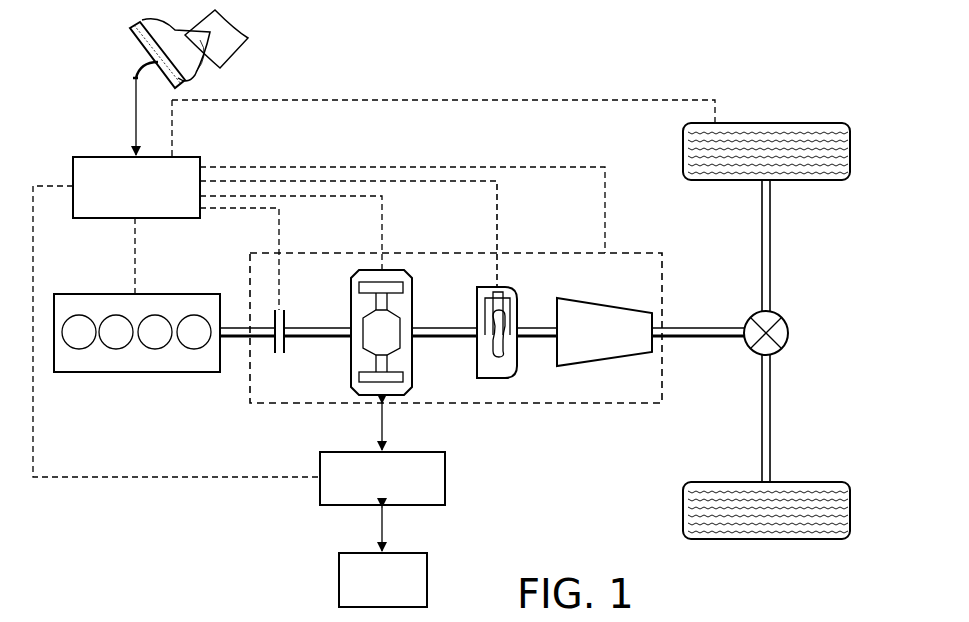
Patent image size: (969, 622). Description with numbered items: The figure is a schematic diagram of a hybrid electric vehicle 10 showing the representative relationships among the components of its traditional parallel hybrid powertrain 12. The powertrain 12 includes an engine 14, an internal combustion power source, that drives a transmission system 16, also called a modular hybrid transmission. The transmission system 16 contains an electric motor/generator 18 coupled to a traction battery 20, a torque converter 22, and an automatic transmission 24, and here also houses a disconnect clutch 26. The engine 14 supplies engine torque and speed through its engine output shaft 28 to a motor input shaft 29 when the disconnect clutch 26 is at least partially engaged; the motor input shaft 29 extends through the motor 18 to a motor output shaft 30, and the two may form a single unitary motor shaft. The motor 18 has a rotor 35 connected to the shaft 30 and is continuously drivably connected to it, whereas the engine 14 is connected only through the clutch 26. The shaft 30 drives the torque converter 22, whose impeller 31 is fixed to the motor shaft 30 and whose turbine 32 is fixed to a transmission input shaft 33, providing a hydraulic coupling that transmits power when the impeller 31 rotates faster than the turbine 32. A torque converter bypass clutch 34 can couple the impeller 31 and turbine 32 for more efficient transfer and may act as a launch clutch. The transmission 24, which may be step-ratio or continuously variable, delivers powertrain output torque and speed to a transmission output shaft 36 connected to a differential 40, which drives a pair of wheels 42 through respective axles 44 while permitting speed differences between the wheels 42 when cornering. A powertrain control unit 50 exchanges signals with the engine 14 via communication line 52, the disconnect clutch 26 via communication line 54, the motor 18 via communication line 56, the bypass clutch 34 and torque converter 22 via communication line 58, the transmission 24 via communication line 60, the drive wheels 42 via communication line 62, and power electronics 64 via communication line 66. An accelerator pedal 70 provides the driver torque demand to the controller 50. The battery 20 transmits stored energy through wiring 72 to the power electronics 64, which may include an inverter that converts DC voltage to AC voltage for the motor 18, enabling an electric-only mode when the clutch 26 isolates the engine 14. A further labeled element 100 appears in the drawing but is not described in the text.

The hybrid electric vehicle 10 is at (600, 70).
The parallel hybrid powertrain 12 is at (233, 517).
The engine 14 is at (97, 294).
The transmission system 16 is at (470, 253).
The electric motor/generator 18 is at (368, 270).
The traction battery 20 is at (339, 580).
The torque converter 22 is at (503, 380).
The automatic transmission 24 is at (605, 366).
The disconnect clutch 26 is at (289, 347).
The engine output shaft 28 is at (247, 328).
The motor input shaft 29 is at (340, 328).
The motor output shaft 30 is at (457, 328).
The impeller 31 is at (497, 362).
The turbine 32 is at (491, 320).
The transmission input shaft 33 is at (528, 328).
The torque converter bypass clutch 34 is at (500, 295).
The rotor 35 is at (400, 282).
The transmission output shaft 36 is at (713, 328).
The differential 40 is at (790, 340).
The wheels 42 is at (745, 123).
The axles 44 is at (775, 250).
The powertrain control unit 50 is at (105, 157).
The communication line 52 is at (140, 271).
The communication line 54 is at (275, 247).
The communication line 56 is at (378, 235).
The communication line 58 is at (502, 225).
The communication line 60 is at (608, 230).
The communication line 62 is at (398, 100).
The power electronics 64 is at (445, 480).
The communication line 66 is at (157, 478).
The accelerator pedal 70 is at (140, 47).
The wiring 72 is at (378, 535).
The control system 100 is at (120, 621).